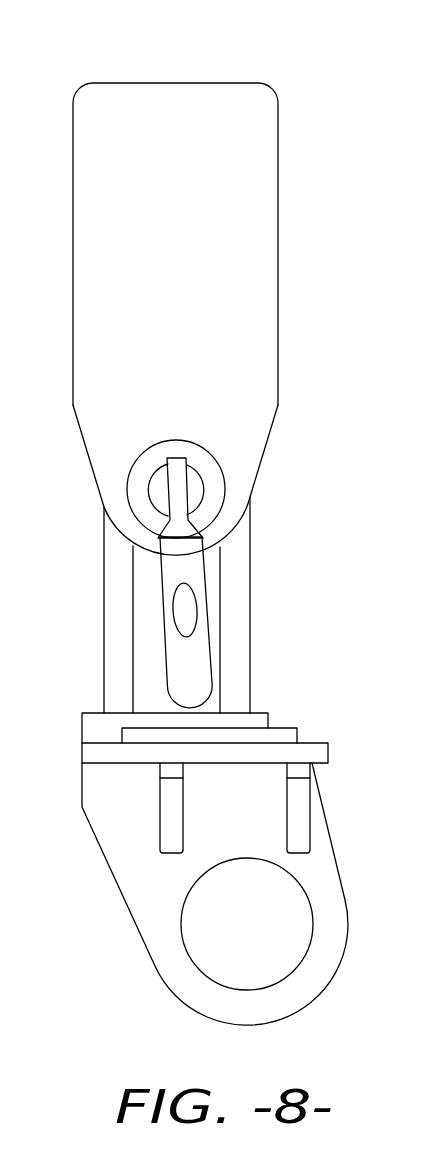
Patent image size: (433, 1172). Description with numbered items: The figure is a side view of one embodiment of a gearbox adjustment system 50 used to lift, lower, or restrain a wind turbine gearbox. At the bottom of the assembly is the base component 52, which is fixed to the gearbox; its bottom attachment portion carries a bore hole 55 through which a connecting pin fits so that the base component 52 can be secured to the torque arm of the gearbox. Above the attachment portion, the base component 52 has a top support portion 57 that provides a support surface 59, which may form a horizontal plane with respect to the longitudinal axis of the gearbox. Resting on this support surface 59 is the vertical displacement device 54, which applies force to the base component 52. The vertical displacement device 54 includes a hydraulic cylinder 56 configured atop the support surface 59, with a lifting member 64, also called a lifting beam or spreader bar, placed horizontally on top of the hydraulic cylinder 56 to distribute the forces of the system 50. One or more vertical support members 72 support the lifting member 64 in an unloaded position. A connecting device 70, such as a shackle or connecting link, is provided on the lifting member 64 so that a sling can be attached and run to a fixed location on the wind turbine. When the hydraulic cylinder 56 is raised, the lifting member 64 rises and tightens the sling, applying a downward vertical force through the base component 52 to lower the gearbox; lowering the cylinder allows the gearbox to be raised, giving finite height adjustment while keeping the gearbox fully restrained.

The gearbox adjustment system 50 is at (208, 533).
The base component 52 is at (339, 977).
The vertical displacement device 54 is at (101, 612).
The bore hole 55 is at (217, 923).
The hydraulic cylinder 56 is at (103, 578).
The top support portion 57 is at (80, 752).
The support surface 59 is at (302, 743).
The lifting member 64 is at (172, 100).
The connecting device 70 is at (193, 658).
The vertical support member 72 is at (150, 638).